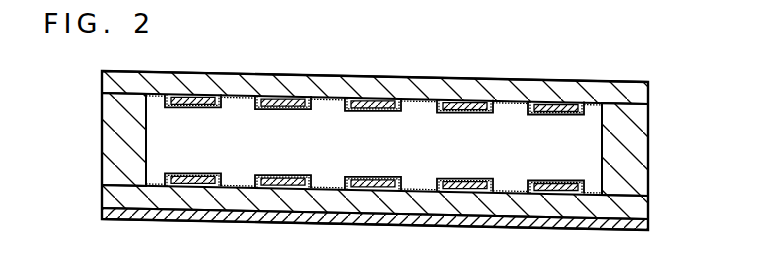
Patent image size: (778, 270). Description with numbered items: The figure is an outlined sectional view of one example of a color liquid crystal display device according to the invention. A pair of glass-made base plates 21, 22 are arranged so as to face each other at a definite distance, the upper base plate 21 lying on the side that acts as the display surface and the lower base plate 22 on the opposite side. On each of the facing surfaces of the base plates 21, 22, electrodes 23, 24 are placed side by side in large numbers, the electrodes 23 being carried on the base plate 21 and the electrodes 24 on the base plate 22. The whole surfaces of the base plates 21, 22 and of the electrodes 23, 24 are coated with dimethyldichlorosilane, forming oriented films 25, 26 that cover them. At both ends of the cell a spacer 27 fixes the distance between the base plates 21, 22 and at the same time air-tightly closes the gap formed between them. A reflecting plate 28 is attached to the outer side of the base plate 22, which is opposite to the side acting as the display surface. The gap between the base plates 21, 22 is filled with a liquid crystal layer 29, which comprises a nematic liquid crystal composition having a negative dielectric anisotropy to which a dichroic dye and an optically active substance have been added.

The base plate 21 is at (563, 93).
The base plate 22 is at (537, 208).
The electrodes 23 is at (467, 105).
The electrodes 24 is at (465, 193).
The oriented film 25 is at (331, 97).
The oriented film 26 is at (328, 190).
The spacer 27 is at (120, 137).
The reflecting plate 28 is at (613, 220).
The liquid crystal layer 29 is at (243, 118).